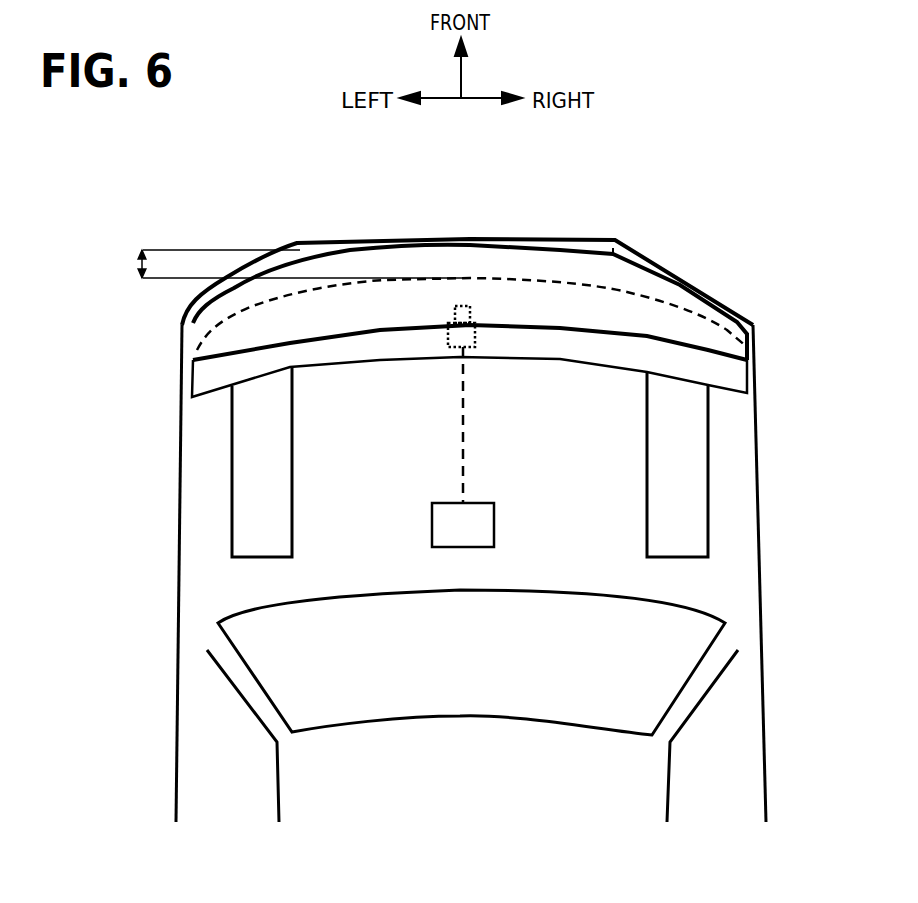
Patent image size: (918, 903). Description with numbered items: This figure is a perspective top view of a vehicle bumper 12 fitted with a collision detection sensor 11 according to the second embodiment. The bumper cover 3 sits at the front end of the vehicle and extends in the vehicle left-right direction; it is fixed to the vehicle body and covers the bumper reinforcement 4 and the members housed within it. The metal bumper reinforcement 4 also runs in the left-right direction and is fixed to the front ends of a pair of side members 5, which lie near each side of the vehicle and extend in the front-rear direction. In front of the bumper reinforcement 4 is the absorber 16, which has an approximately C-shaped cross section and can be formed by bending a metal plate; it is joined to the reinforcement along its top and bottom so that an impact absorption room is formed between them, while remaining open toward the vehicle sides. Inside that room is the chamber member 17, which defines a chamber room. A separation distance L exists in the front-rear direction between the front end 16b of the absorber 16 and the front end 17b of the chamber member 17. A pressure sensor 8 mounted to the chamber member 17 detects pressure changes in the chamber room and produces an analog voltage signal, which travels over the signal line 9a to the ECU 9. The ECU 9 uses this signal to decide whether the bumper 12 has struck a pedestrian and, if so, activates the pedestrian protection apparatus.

The collision detection sensor 11 is at (602, 202).
The vehicle bumper 12 is at (296, 208).
The bumper cover 3 is at (503, 238).
The bumper reinforcement 4 is at (746, 372).
The side member 5 is at (232, 522).
The pressure sensor 8 is at (448, 332).
The ECU 9 is at (494, 512).
The signal line 9a is at (465, 445).
The absorber 16 is at (695, 281).
The front end of the absorber 16b is at (613, 252).
The chamber member 17 is at (763, 322).
The front end of the chamber member 17b is at (650, 290).
The separation distance L is at (292, 264).